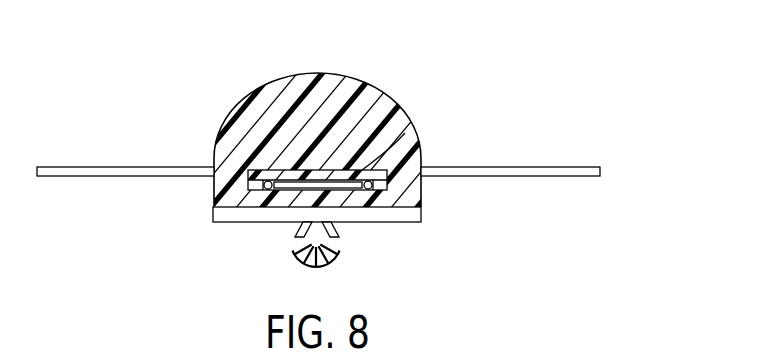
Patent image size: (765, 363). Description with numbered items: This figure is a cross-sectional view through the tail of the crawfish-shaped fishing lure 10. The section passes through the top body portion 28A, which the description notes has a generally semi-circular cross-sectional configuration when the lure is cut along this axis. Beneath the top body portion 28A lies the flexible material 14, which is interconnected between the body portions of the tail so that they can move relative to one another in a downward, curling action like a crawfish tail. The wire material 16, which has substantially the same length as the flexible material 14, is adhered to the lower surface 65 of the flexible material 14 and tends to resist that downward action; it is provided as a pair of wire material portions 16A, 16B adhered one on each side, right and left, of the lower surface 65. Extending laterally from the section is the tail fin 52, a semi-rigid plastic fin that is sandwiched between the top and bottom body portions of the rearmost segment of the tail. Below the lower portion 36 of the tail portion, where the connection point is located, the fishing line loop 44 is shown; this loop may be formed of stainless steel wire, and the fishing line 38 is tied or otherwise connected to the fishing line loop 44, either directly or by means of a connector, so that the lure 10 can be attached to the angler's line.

The fishing lure 10 is at (452, 50).
The flexible material 14 is at (326, 170).
The wire material 16 is at (274, 191).
The wire material portion 16A is at (252, 186).
The wire material portion 16B is at (370, 183).
The top body portion 28A is at (248, 120).
The lower portion 36 is at (418, 222).
The fishing line 38 is at (340, 243).
The fishing line loop 44 is at (333, 231).
The tail fin 52 is at (563, 167).
The lower surface 65 is at (365, 169).